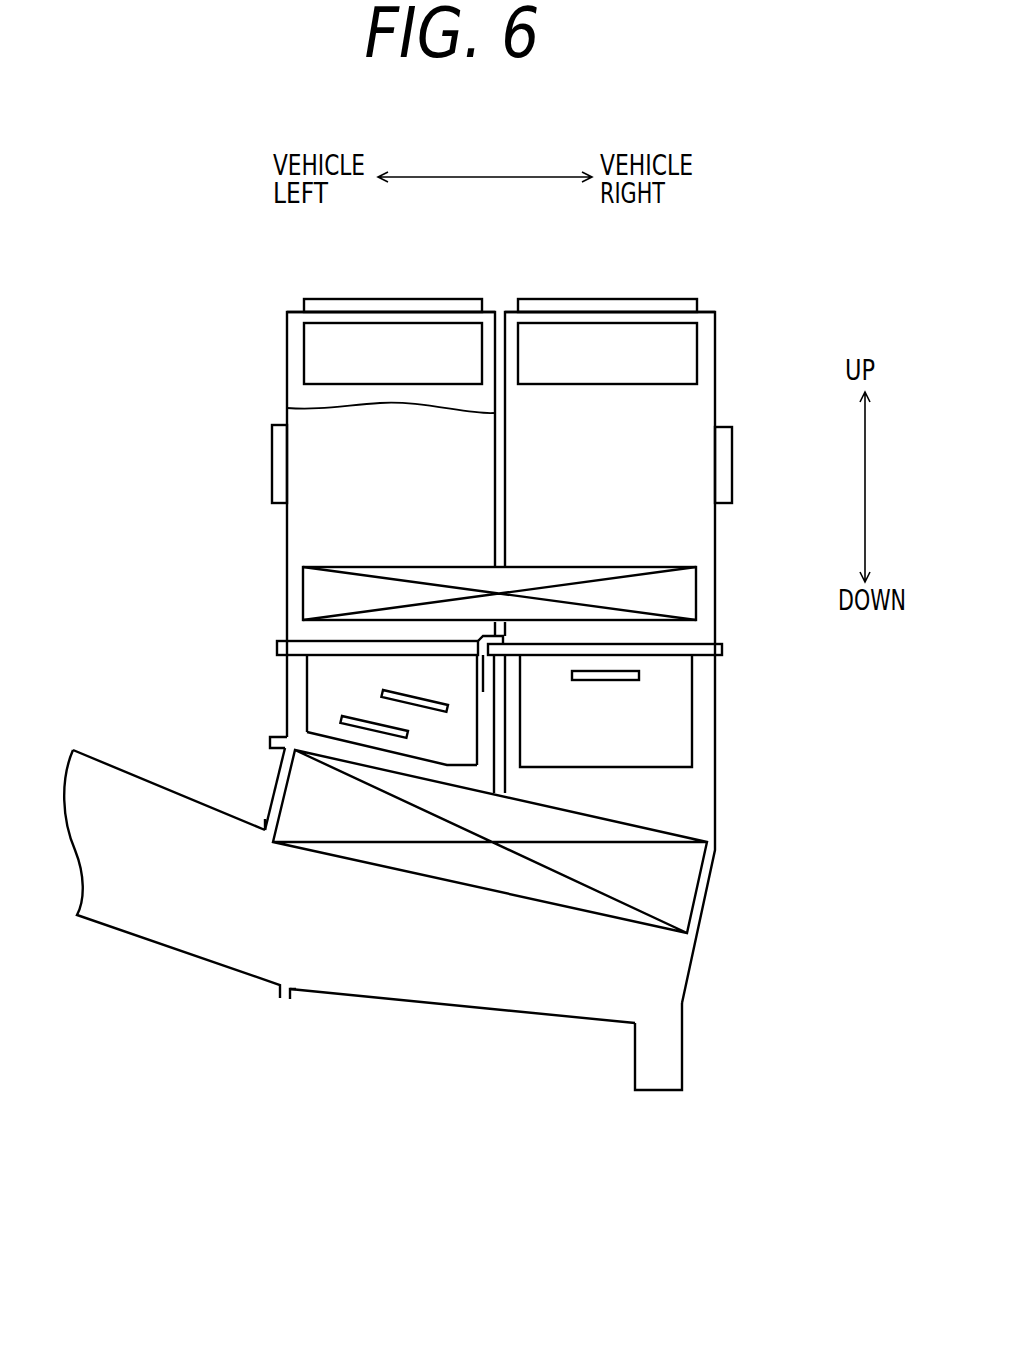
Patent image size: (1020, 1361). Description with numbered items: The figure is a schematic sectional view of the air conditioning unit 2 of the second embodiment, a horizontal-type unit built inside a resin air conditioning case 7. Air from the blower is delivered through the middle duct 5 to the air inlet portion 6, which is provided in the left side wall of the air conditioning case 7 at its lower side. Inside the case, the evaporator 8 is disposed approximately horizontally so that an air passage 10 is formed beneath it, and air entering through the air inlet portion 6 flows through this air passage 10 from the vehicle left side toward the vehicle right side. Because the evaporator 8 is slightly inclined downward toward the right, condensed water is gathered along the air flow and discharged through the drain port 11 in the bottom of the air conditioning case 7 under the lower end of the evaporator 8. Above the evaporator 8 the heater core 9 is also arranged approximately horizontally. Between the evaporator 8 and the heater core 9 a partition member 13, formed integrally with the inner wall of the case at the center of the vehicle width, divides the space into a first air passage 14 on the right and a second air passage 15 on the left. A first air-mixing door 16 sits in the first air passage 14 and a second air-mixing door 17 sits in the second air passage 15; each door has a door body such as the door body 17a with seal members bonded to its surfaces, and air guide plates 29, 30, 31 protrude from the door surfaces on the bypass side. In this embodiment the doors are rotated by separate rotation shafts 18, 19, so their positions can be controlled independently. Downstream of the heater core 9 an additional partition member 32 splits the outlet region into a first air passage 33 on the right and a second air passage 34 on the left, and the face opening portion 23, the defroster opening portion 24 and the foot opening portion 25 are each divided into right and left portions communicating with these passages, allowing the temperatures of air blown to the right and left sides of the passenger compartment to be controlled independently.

The air conditioning unit 2 is at (750, 658).
The middle duct 5 is at (117, 930).
The air inlet portion 6 is at (305, 928).
The air conditioning case 7 is at (285, 548).
The evaporator 8 is at (670, 888).
The heater core 9 is at (677, 594).
The air passage 10 is at (420, 932).
The drain port 11 is at (658, 1070).
The partition member 13 is at (508, 718).
The first air passage 14 is at (653, 800).
The second air passage 15 is at (372, 757).
The first air-mixing door 16 is at (665, 757).
The second air-mixing door 17 is at (322, 698).
The door body 17a is at (427, 760).
The rotation shaft 18 is at (662, 647).
The rotation shaft 19 is at (298, 648).
The face opening portion 23 is at (303, 352).
The defroster opening portion 24 is at (395, 298).
The foot opening portion 25 is at (270, 463).
The air guide plate 29 is at (639, 675).
The air guide plate 30 is at (405, 692).
The air guide plate 31 is at (362, 715).
The partition member 32 is at (287, 408).
The first air passage 33 is at (603, 478).
The second air passage 34 is at (397, 478).